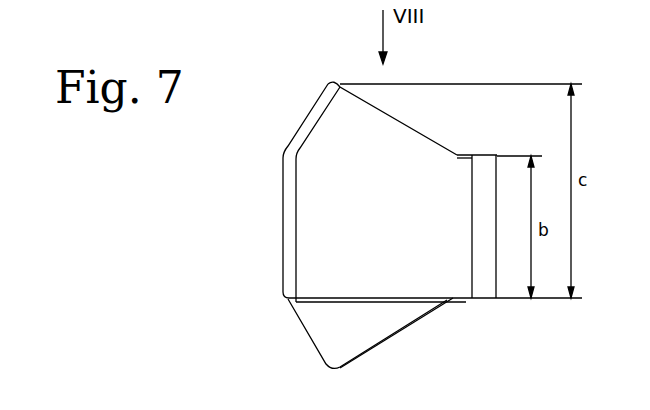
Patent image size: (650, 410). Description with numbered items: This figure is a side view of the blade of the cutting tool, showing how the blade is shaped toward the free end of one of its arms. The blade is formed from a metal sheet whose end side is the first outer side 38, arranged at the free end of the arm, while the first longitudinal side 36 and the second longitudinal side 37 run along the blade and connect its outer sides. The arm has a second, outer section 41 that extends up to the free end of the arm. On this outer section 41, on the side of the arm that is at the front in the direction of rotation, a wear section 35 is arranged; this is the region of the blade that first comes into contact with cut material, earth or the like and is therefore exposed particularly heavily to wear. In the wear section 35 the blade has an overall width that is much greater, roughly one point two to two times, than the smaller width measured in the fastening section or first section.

The wear section 35 is at (338, 122).
The first longitudinal side 36 is at (482, 154).
The second longitudinal side 37 is at (478, 300).
The first outer side 38 is at (290, 205).
The outer section 41 is at (320, 240).